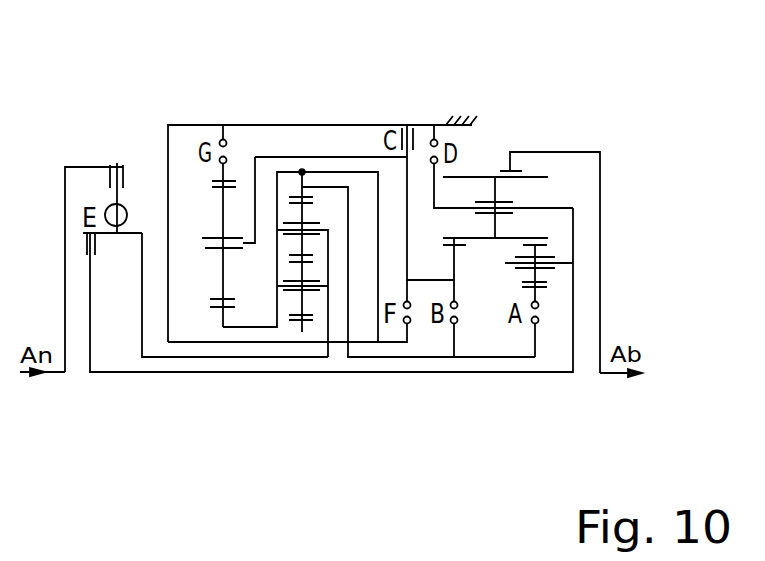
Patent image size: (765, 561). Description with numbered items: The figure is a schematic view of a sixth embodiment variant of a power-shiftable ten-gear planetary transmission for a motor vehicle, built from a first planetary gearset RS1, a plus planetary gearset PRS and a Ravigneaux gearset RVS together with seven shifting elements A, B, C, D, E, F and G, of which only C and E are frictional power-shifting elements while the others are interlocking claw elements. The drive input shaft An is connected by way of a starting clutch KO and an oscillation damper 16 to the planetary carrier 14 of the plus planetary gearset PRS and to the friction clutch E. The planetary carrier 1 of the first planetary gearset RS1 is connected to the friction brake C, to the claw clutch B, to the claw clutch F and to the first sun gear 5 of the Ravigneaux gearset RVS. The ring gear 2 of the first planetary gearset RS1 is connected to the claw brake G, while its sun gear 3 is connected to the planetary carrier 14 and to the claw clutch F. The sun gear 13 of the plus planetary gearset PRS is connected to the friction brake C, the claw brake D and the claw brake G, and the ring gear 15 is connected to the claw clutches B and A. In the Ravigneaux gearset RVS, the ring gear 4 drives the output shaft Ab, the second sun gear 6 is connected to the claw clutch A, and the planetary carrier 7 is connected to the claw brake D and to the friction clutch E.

The planetary carrier of the first planetary gearset 1 is at (243, 246).
The ring gear of the first planetary gearset 2 is at (226, 167).
The sun gear of the first planetary gearset 3 is at (222, 313).
The ring gear of the Ravigneaux gearset 4 is at (513, 164).
The first sun gear of the Ravigneaux gearset 5 is at (456, 263).
The second sun gear of the Ravigneaux gearset 6 is at (538, 303).
The planetary carrier of the Ravigneaux gearset 7 is at (574, 300).
The sun gear of the plus planetary gearset 13 is at (302, 332).
The planetary carrier of the plus planetary gearset 14 is at (329, 343).
The ring gear of the plus planetary gearset 15 is at (333, 186).
The oscillation damper 16 is at (123, 222).
The starting clutch KO is at (117, 162).
The first planetary gearset RS1 is at (223, 118).
The plus planetary gearset PRS is at (302, 170).
The Ravigneaux gearset RVS is at (502, 138).